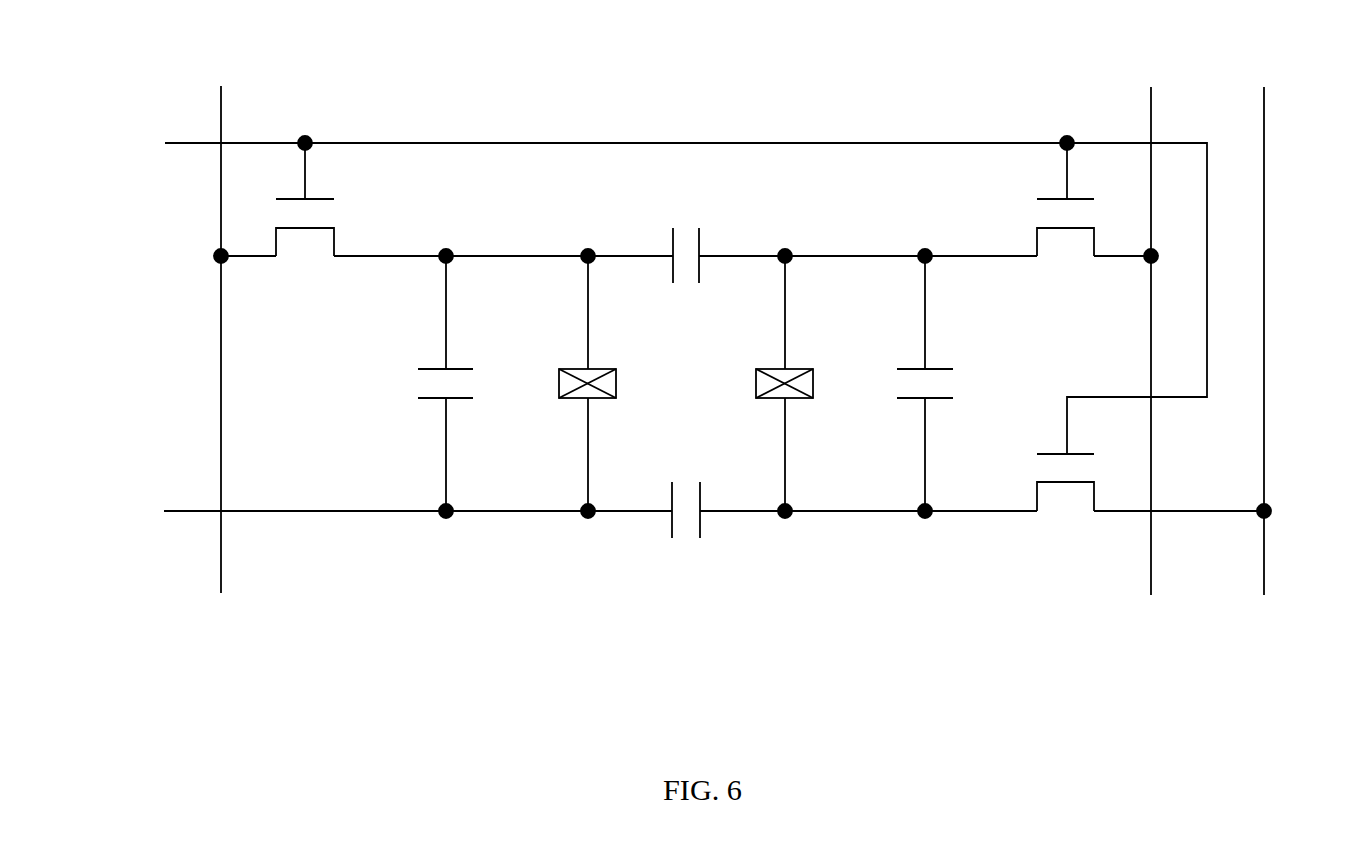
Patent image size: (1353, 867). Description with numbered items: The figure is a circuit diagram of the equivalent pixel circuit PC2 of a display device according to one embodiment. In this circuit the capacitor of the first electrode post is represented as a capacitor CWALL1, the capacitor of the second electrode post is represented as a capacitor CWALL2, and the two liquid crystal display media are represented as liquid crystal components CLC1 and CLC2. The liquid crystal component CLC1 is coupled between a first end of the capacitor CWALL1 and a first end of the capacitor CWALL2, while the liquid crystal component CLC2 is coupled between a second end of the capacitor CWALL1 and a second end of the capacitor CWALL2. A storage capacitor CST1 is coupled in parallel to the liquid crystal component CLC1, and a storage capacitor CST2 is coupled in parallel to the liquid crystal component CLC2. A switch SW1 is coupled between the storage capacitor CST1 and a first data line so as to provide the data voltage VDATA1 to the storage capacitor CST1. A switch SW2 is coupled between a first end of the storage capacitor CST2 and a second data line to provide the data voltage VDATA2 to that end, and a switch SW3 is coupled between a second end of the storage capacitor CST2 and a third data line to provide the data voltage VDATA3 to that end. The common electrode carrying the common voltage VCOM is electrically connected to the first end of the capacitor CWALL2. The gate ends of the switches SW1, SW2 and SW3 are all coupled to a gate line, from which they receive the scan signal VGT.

The pixel circuit PC2 is at (113, 39).
The data voltage VDATA1 is at (242, 320).
The data voltage VDATA2 is at (1174, 320).
The data voltage VDATA3 is at (1286, 320).
The scan signal VGT is at (658, 292).
The common voltage VCOM is at (671, 509).
The switch SW1 is at (305, 220).
The switch SW2 is at (1065, 220).
The switch SW3 is at (1065, 502).
The storage capacitor CST1 is at (473, 383).
The storage capacitor CST2 is at (953, 383).
The liquid crystal component CLC1 is at (614, 383).
The liquid crystal component CLC2 is at (813, 383).
The capacitor CWALL1 is at (682, 235).
The capacitor CWALL2 is at (692, 490).